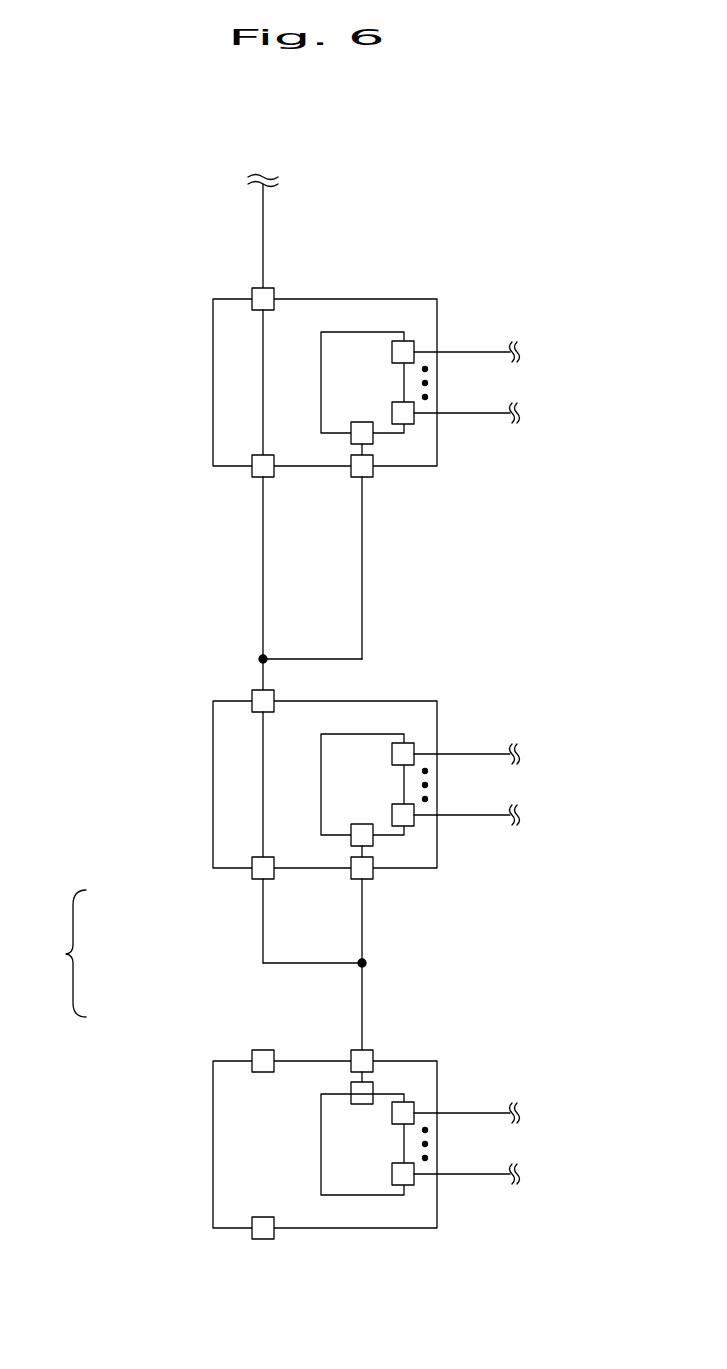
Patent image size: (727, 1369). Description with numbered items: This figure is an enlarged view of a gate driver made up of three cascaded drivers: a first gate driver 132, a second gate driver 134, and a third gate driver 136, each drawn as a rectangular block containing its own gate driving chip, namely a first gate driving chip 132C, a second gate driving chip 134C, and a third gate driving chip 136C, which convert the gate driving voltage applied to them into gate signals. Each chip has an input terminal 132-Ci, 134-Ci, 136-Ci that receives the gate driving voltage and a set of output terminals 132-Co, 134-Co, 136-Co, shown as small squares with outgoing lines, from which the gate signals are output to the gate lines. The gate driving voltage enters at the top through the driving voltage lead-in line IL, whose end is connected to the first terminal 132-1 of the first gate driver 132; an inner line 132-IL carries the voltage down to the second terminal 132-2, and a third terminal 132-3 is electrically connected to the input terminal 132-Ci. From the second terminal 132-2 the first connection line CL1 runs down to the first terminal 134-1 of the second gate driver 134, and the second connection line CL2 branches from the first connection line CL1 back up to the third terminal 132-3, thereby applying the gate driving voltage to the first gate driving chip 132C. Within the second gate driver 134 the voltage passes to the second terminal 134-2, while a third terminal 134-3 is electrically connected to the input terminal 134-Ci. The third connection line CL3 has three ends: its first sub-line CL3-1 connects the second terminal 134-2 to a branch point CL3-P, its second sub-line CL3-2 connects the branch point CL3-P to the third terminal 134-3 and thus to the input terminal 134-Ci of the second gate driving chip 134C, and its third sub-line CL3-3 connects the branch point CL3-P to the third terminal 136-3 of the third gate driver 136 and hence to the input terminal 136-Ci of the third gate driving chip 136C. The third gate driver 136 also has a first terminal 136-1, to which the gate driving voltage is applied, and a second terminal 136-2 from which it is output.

The driving voltage lead-in line IL is at (263, 220).
The first gate driver 132 is at (213, 340).
The first terminal 132-1 is at (255, 306).
The inner line 132-IL is at (263, 390).
The second terminal 132-2 is at (255, 464).
The first gate driving chip 132C is at (383, 332).
The output terminals 132-Co is at (413, 343).
The input terminal 132-Ci is at (373, 436).
The third terminal 132-3 is at (368, 477).
The first connection line CL1 is at (263, 556).
The second connection line CL2 is at (362, 556).
The second gate driver 134 is at (213, 786).
The first terminal 134-1 is at (255, 690).
The second terminal 134-2 is at (255, 866).
The second gate driving chip 134C is at (383, 734).
The output terminals 134-Co is at (413, 745).
The input terminal 134-Ci is at (373, 838).
The third terminal 134-3 is at (373, 878).
The third connection line CL3 is at (56, 953).
The first sub-line CL3-1 is at (263, 896).
The second sub-line CL3-2 is at (362, 936).
The third sub-line CL3-3 is at (362, 1000).
The branch point CL3-P is at (366, 963).
The third gate driver 136 is at (213, 1146).
The first terminal 136-1 is at (262, 1073).
The second terminal 136-2 is at (262, 1216).
The third terminal 136-3 is at (372, 1050).
The input terminal 136-Ci is at (373, 1086).
The third gate driving chip 136C is at (401, 1094).
The output terminals 136-Co is at (405, 1185).